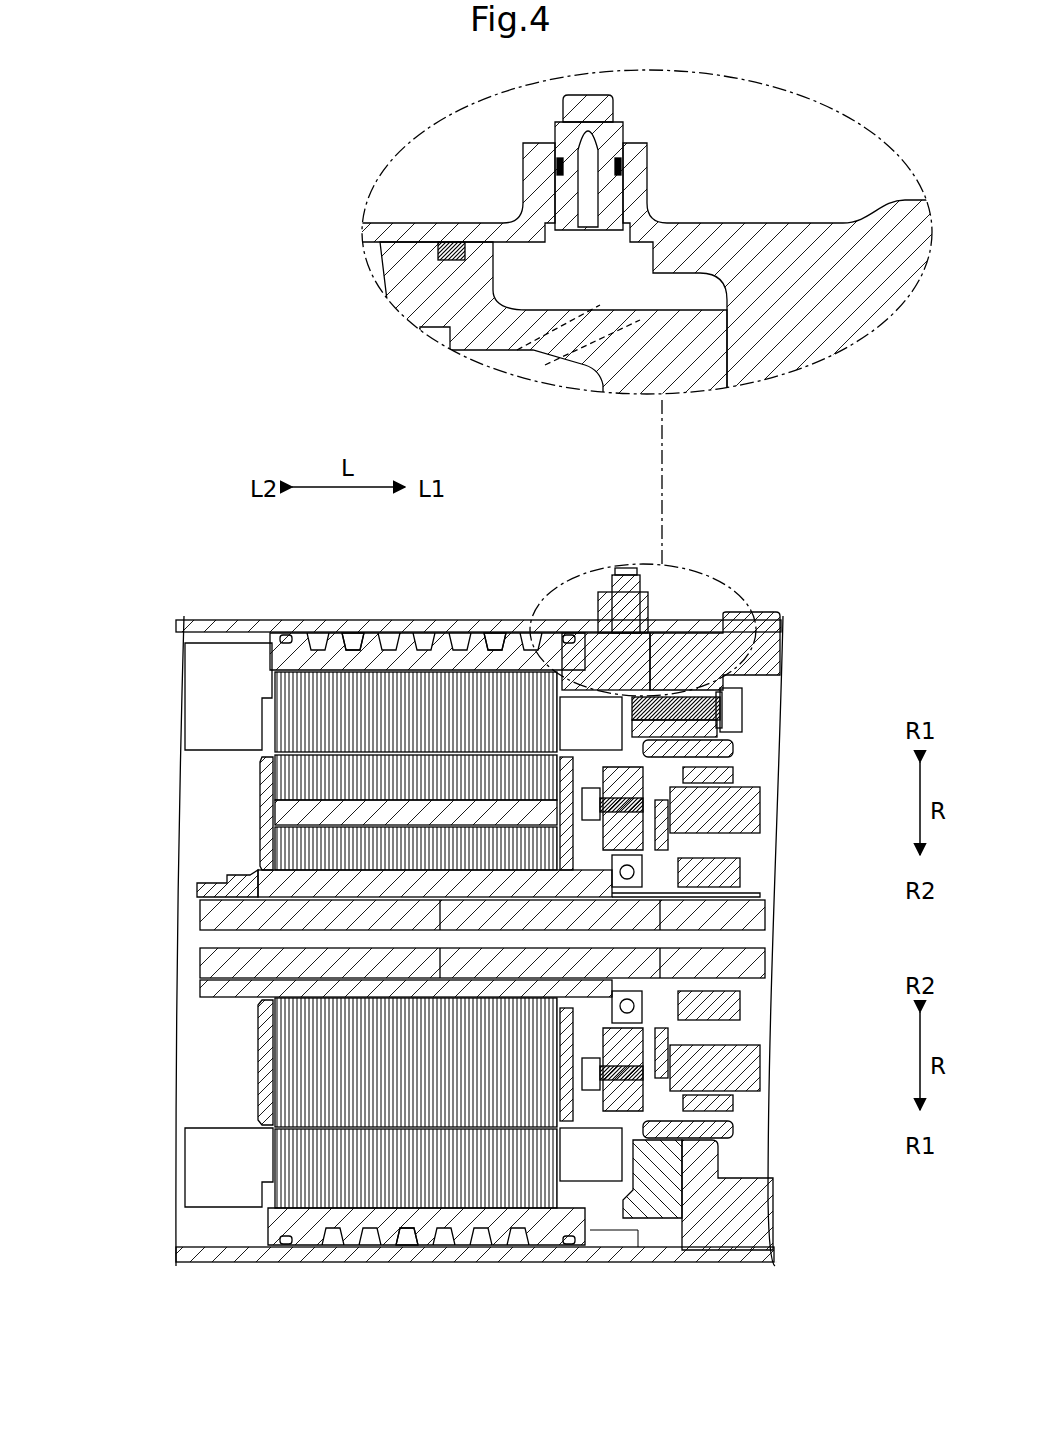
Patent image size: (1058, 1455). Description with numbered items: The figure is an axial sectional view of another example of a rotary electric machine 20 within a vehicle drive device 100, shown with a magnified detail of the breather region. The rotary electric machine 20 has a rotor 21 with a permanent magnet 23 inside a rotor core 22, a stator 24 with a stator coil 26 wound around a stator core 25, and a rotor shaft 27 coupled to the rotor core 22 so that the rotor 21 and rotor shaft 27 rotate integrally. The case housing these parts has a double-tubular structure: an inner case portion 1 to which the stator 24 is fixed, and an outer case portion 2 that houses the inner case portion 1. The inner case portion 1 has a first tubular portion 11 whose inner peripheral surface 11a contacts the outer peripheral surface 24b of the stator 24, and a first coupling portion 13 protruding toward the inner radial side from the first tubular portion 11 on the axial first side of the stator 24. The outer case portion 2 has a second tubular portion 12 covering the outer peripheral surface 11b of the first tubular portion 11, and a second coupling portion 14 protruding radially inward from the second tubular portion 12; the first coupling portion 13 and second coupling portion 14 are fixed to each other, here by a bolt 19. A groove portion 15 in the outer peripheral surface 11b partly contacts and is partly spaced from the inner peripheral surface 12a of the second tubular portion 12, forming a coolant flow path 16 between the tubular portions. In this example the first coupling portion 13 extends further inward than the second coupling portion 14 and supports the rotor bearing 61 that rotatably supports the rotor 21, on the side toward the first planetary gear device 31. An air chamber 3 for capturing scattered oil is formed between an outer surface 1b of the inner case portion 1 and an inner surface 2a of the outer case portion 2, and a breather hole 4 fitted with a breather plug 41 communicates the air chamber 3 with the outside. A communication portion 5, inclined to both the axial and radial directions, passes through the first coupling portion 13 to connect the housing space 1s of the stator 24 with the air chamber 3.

The vehicle drive device 100 is at (163, 450).
The rotary electric machine 20 is at (155, 525).
The inner case portion 1 is at (275, 1228).
The outer case portion 2 is at (210, 1264).
The outer surface of the inner case portion 1b is at (500, 295).
The housing space 1s is at (590, 1100).
The inner surface of the outer case portion 2a is at (655, 268).
The air chamber 3 is at (600, 299).
The breather hole 4 is at (620, 138).
The communication portion 5 is at (525, 355).
The breather plug 41 is at (565, 108).
The first tubular portion 11 is at (455, 1236).
The inner peripheral surface 11a is at (305, 680).
The outer peripheral surface 11b is at (293, 635).
The second tubular portion 12 is at (265, 1264).
The inner peripheral surface 12a is at (425, 1246).
The first coupling portion 13 is at (660, 1218).
The second coupling portion 14 is at (710, 1160).
The groove portion 15 is at (480, 650).
The coolant flow path 16 is at (353, 645).
The fastening bolt 19 is at (728, 712).
The rotor 21 is at (232, 1050).
The rotor core 22 is at (290, 1103).
The permanent magnet 23 is at (290, 812).
The stator 24 is at (160, 740).
The outer peripheral surface of the stator 24b is at (420, 668).
The stator core 25 is at (288, 1163).
The stator coil 26 is at (190, 660).
The rotor shaft 27 is at (240, 878).
The first planetary gear device 31 is at (760, 692).
The rotor bearing 61 is at (630, 992).